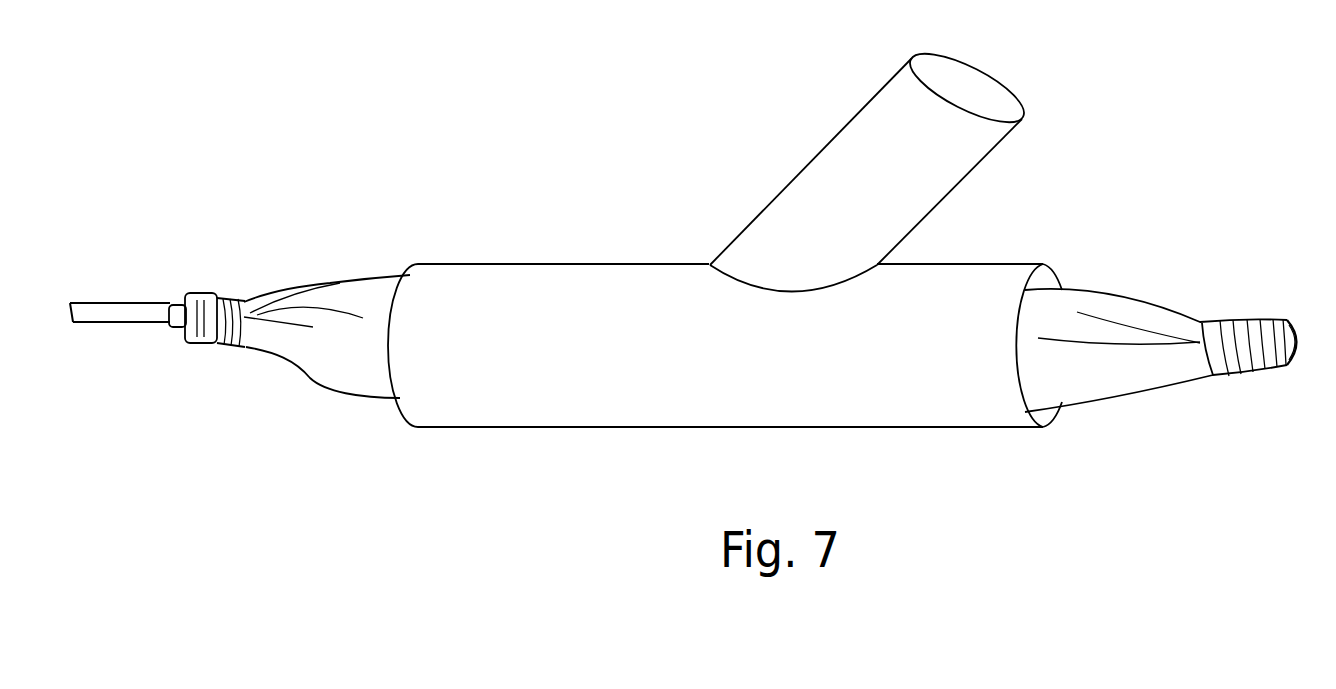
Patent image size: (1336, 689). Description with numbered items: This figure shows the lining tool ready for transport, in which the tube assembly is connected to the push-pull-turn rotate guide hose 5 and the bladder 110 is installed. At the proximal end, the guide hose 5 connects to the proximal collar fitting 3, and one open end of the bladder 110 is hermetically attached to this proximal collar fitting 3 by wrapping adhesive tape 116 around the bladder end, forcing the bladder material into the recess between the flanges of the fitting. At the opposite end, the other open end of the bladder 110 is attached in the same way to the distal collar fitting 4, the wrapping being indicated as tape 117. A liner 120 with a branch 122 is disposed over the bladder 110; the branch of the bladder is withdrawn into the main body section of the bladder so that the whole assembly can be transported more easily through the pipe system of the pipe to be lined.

The proximal collar fitting 3 is at (187, 292).
The distal collar fitting 4 is at (1292, 320).
The push-pull-turn rotate guide hose 5 is at (132, 308).
The bladder 110 is at (377, 290).
The adhesive tape 116 is at (217, 300).
The right boot 117 is at (1260, 324).
The liner 120 is at (621, 282).
The branch 122 is at (835, 165).